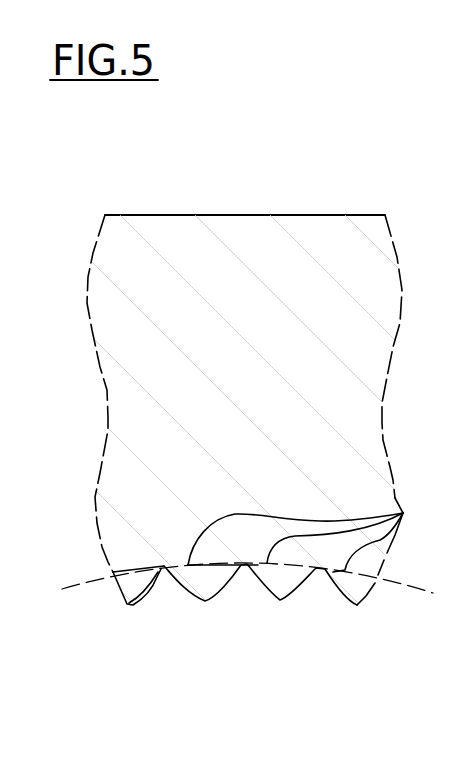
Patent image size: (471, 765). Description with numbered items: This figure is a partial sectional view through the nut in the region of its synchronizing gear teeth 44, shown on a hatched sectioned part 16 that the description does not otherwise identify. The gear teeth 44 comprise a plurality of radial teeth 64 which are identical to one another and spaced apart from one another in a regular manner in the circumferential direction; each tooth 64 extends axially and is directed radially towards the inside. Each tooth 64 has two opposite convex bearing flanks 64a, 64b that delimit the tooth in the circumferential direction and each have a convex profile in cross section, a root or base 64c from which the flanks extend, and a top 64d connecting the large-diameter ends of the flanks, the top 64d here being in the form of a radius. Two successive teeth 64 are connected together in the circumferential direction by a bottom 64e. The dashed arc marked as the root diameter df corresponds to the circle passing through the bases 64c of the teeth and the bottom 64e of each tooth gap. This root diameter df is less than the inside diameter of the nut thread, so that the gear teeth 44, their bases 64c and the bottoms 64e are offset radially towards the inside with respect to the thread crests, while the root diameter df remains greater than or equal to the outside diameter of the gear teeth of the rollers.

The cutting tool body 16 is at (302, 213).
The synchronizing gear teeth 44 is at (95, 512).
The radial tooth 64 is at (125, 585).
The convex bearing flank 64a is at (168, 575).
The convex bearing flank 64b is at (233, 582).
The root or base 64c is at (403, 513).
The top 64d is at (203, 600).
The bottom 64e is at (123, 602).
The root diameter df is at (433, 593).